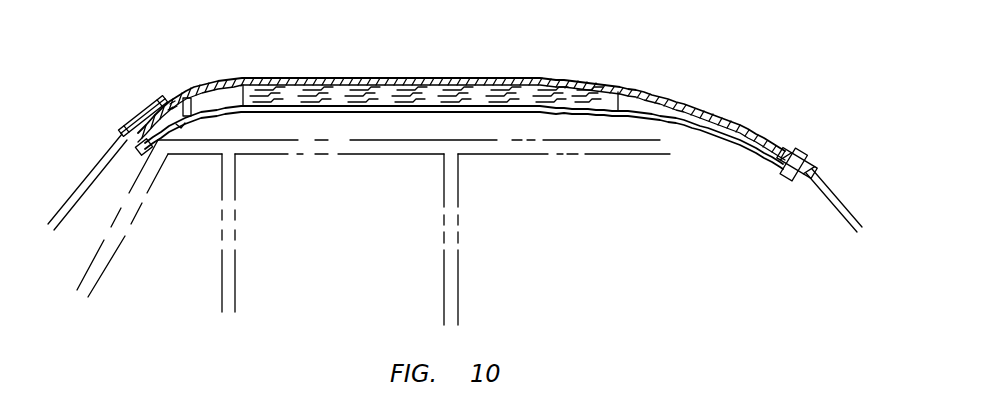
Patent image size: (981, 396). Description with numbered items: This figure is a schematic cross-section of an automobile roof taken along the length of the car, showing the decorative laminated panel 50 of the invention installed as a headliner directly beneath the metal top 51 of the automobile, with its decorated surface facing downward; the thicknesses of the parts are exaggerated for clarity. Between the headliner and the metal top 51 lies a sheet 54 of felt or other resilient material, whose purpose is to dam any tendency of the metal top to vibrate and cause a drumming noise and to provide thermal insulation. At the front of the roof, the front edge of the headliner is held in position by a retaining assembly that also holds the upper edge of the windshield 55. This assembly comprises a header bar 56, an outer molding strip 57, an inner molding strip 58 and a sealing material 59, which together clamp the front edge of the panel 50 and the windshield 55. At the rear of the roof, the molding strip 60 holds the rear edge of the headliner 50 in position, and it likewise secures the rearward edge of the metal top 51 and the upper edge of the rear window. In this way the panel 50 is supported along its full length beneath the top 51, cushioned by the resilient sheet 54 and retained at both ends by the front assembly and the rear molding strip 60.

The decorative laminated panel 50 is at (393, 108).
The top 51 is at (326, 78).
The sheet of resilient material 54 is at (453, 97).
The windshield 55 is at (107, 161).
The header bar 56 is at (173, 98).
The outer molding strip 57 is at (143, 112).
The inner molding strip 58 is at (183, 127).
The sealing material 59 is at (147, 153).
The molding strip 60 is at (806, 160).